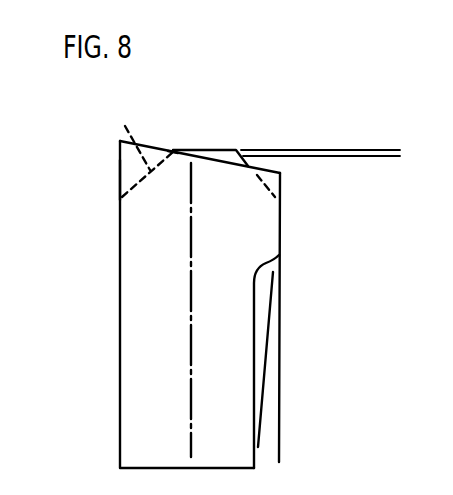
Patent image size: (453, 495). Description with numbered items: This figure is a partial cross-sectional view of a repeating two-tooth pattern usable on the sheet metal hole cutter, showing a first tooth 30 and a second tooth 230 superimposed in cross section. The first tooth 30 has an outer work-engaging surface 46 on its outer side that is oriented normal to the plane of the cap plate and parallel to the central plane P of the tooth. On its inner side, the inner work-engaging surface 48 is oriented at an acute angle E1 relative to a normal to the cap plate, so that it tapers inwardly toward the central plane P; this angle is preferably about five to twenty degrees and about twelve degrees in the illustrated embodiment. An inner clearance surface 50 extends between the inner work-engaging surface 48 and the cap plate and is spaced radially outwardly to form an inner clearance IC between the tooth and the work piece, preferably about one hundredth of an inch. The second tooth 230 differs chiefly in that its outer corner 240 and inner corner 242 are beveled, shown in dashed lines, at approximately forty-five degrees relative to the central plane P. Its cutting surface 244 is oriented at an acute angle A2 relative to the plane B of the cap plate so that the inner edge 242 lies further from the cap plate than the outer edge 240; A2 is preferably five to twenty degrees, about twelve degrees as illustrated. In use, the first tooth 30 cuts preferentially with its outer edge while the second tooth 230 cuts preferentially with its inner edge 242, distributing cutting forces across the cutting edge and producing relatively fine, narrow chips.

The first tooth 30 is at (118, 333).
The outer work-engaging surface 46 is at (120, 180).
The inner work-engaging surface 48 is at (280, 223).
The inner clearance surface 50 is at (255, 297).
The outer corner 240 is at (183, 150).
The second tooth 230 is at (173, 151).
The cutting surface 244 is at (209, 148).
The inner corner 242 is at (242, 153).
The acute angle A2 is at (387, 190).
The plane of the cap plate B is at (323, 157).
The central plane P is at (190, 396).
The acute angle E1 is at (207, 400).
The inner clearance IC is at (230, 441).